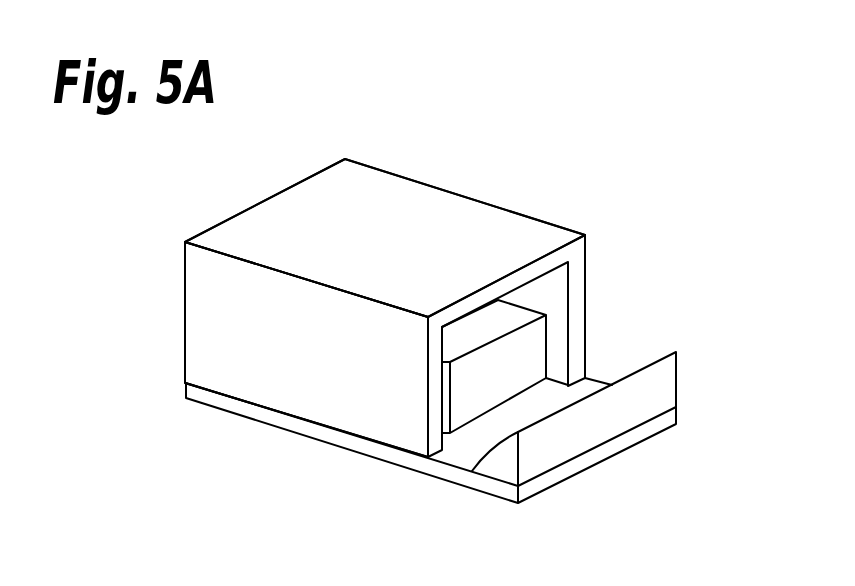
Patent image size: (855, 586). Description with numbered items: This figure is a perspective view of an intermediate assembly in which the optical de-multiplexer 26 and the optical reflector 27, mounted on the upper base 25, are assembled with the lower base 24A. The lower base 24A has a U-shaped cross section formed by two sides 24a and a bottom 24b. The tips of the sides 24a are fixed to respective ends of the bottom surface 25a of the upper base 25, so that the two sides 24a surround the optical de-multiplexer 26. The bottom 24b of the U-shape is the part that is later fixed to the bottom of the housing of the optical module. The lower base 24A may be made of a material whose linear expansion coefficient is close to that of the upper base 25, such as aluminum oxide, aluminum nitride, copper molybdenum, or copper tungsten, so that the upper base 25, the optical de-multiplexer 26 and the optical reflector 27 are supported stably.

The lower base 24A is at (231, 204).
The sides 24a is at (218, 316).
The bottom 24b is at (498, 238).
The upper base 25 is at (312, 445).
The bottom surface 25a is at (470, 452).
The optical de-multiplexer 26 is at (527, 347).
The optical reflector 27 is at (640, 394).